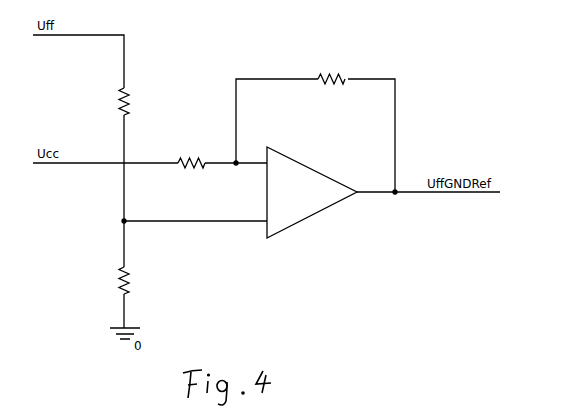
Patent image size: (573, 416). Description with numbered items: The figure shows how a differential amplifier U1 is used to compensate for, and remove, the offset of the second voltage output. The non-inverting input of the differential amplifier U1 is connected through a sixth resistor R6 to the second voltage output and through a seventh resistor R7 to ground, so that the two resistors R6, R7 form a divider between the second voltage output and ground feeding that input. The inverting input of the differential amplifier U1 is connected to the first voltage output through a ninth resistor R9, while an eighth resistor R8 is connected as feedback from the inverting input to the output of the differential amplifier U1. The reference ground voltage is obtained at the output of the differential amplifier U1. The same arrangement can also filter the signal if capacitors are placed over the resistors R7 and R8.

The sixth resistor R6 is at (131, 109).
The seventh resistor R7 is at (128, 272).
The eighth resistor R8 is at (323, 74).
The ninth resistor R9 is at (205, 159).
The differential amplifier U1 is at (312, 186).